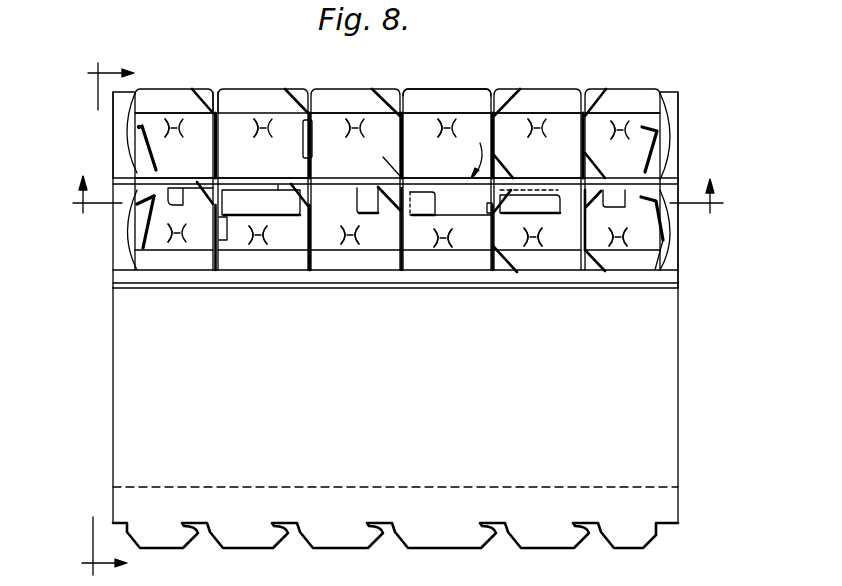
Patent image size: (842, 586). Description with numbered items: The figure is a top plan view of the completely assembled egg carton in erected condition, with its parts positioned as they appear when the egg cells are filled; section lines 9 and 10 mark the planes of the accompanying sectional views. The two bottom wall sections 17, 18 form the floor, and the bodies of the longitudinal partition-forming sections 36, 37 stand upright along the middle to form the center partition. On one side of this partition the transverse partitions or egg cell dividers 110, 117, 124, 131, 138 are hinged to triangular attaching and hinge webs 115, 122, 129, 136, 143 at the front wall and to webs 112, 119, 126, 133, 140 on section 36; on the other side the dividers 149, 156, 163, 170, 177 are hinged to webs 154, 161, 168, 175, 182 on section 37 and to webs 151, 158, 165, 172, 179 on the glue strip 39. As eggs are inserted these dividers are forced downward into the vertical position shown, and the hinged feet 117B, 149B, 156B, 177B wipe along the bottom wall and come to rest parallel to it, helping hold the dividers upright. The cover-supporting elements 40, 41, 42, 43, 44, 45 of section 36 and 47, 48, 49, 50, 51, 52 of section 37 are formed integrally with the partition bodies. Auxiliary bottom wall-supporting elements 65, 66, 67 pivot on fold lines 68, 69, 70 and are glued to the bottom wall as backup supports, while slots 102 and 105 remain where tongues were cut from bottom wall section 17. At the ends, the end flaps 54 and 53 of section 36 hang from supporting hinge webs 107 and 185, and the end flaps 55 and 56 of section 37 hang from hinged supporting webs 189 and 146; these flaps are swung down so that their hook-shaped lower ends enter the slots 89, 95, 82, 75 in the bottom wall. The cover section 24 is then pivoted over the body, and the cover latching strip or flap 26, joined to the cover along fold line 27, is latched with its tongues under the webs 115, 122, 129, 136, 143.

The section line 10- 10 is at (91, 319).
The section line 9- 9 is at (393, 195).
The slot 89 is at (144, 123).
The supporting hinge web 107 is at (120, 122).
The end wall or end flap 54 is at (135, 138).
The end wall or end flap 56 is at (140, 218).
The hinged supporting web 146 is at (117, 242).
The slot or opening 75 is at (140, 242).
The slot 95 is at (643, 124).
The end wall or end flap 53 is at (667, 128).
The hinged supporting web 185 is at (675, 143).
The end wall or end flap 55 is at (683, 187).
The hinged supporting web 189 is at (675, 235).
The slot 82 is at (653, 240).
The slot or opening 102 is at (653, 240).
The bottom wall section 18 is at (203, 112).
The attaching and hinge web 115 is at (213, 93).
The attaching and hinge web 122 is at (290, 98).
The attaching and hinge web 129 is at (393, 93).
The attaching and hinge web 136 is at (497, 97).
The attaching and hinge web 143 is at (588, 97).
The transverse partition or egg cell divider 110 is at (220, 130).
The transverse partition or egg cell divider 117 is at (313, 130).
The transverse partition or egg cell divider 124 is at (405, 140).
The transverse partition or egg cell divider 131 is at (496, 130).
The transverse partition or egg cell divider 138 is at (586, 133).
The attaching and hinge web 112 is at (205, 170).
The cover-supporting element 45 is at (175, 177).
The attaching and hinge web 154 is at (240, 162).
The hinged foot 117B is at (304, 147).
The cover-supporting element 44 is at (268, 170).
The attaching and hinge web 119 is at (313, 172).
The cover-supporting element 43 is at (383, 157).
The attaching and hinge web 126 is at (403, 160).
The attaching and hinge web 168 is at (402, 177).
The longitudinal partition-forming, transverse partition-forming and end flap-formin 36 is at (451, 129).
The cover-supporting element 42 is at (466, 160).
The attaching and hinge web 133 is at (500, 168).
The cover-supporting element 48 is at (541, 177).
The cover-supporting element 41 is at (513, 177).
The attaching and hinge web 140 is at (594, 173).
The cover-supporting element 40 is at (617, 170).
The cover-supporting element 52 is at (180, 198).
The slot or opening 105 is at (150, 212).
The transverse partition or egg cell divider 149 is at (174, 261).
The bottom wall section 17 is at (214, 222).
The attaching and hinge web 151 is at (205, 270).
The fold line 70 is at (261, 202).
The cover-supporting element 51 is at (279, 194).
The attaching and hinge web 161 is at (313, 207).
The auxiliary bottom wall-supporting element 67 is at (270, 224).
The hinged foot 149B is at (263, 261).
The hinged foot 156B is at (277, 272).
The attaching and hinge web 158 is at (290, 262).
The cover-supporting element 50 is at (355, 200).
The auxiliary bottom wall-supporting element 66 is at (362, 213).
The transverse partition or egg cell divider 156 is at (317, 245).
The attaching and hinge web 165 is at (392, 262).
The fold line 69 is at (400, 216).
The cover-supporting element 49 is at (434, 190).
The longitudinal partition-forming, transverse partition-forming and end flap-formin 37 is at (446, 212).
The transverse partition or egg cell divider 170 is at (452, 227).
The transverse partition or egg cell divider 163 is at (447, 261).
The glue strip 39 is at (448, 284).
The attaching and hinge web 172 is at (500, 270).
The attaching and hinge web 175 is at (494, 230).
The auxiliary bottom wall-supporting element 65 is at (547, 225).
The fold line 68 is at (513, 196).
The hinged foot 177B is at (537, 260).
The attaching and hinge web 179 is at (592, 270).
The cover-supporting element 47 is at (603, 198).
The attaching and hinge web 182 is at (585, 212).
The transverse partition or egg cell divider 177 is at (622, 261).
The top wall or cover section 24 is at (662, 420).
The fold line 27 is at (660, 487).
The cover latching strip or flap 26 is at (662, 508).